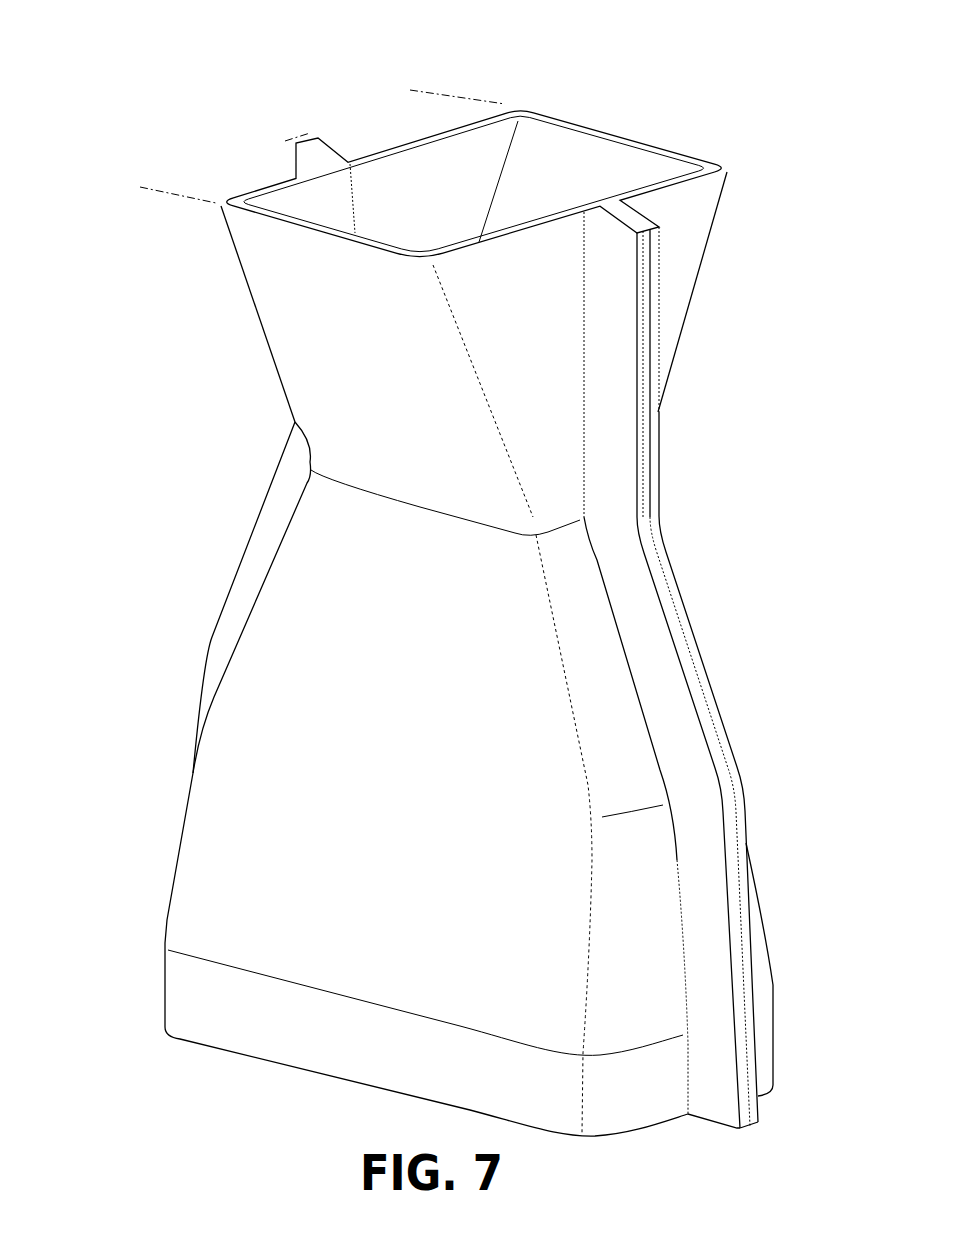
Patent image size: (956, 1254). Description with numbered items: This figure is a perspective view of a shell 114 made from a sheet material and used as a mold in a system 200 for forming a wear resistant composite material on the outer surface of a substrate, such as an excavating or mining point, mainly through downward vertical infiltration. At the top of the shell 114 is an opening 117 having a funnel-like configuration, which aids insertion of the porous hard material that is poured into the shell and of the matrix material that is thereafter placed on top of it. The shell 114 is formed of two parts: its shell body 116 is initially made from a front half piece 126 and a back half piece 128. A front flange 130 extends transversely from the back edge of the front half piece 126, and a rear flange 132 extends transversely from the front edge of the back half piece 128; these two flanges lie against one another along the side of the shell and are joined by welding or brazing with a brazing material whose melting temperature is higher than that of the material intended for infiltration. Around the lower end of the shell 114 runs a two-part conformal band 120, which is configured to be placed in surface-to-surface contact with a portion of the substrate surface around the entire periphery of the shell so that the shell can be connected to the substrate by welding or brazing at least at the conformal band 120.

The system 200 is at (667, 106).
The opening 117 is at (562, 170).
The front half piece 126 is at (283, 138).
The back half piece 128 is at (444, 96).
The front flange 130 is at (623, 366).
The rear flange 132 is at (660, 326).
The shell 114 is at (237, 563).
The shell body 116 is at (220, 828).
The conformal band 120 is at (158, 943).